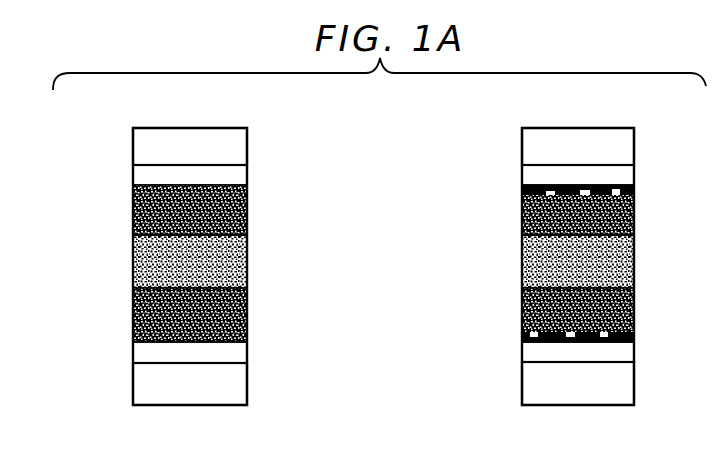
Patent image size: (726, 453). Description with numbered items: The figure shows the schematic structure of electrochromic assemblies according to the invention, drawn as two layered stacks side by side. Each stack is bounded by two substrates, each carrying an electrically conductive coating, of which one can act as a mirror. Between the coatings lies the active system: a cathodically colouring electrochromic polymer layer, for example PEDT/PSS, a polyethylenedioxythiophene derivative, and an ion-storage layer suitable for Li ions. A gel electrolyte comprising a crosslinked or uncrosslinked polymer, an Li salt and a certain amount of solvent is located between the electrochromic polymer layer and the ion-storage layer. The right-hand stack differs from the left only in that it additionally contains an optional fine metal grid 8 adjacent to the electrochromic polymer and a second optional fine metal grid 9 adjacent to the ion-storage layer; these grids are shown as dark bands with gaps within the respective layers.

The fine metal grid 8 is at (520, 188).
The fine metal grid 9 is at (520, 323).